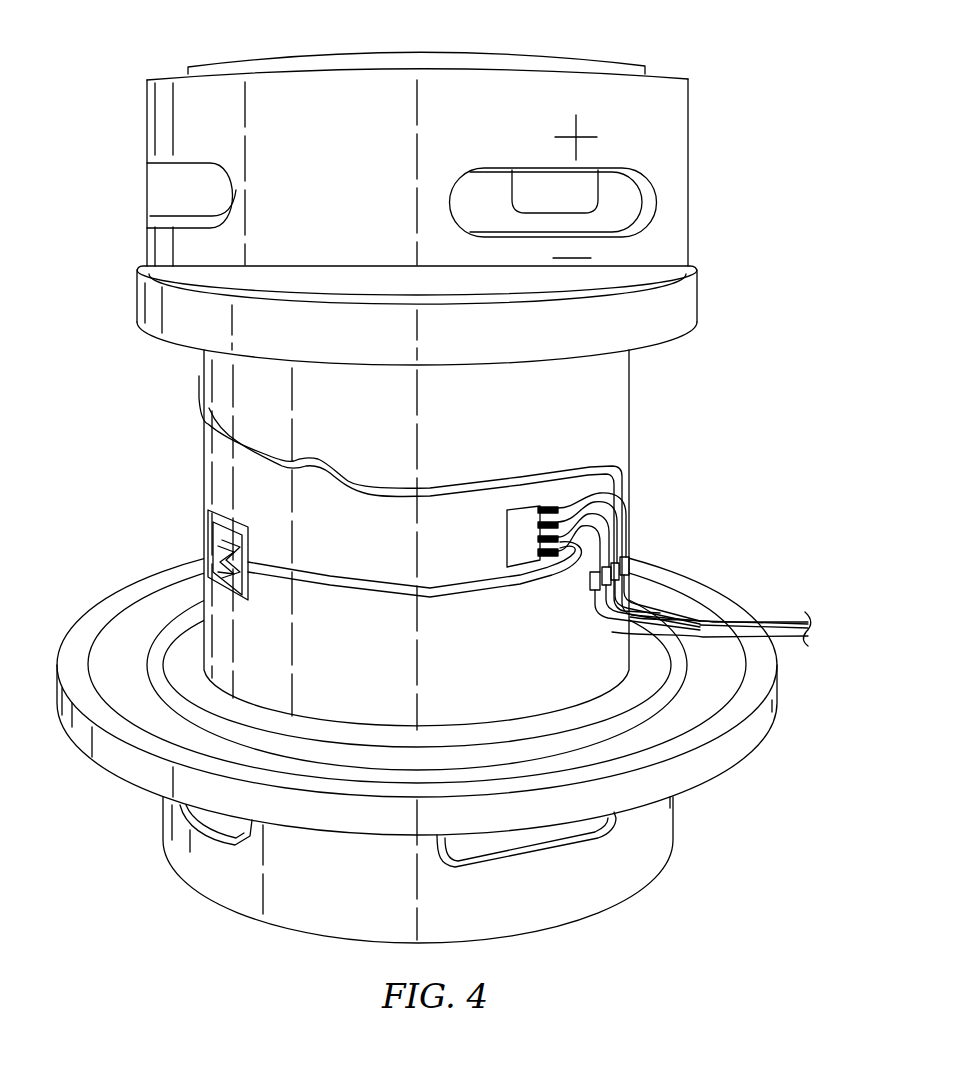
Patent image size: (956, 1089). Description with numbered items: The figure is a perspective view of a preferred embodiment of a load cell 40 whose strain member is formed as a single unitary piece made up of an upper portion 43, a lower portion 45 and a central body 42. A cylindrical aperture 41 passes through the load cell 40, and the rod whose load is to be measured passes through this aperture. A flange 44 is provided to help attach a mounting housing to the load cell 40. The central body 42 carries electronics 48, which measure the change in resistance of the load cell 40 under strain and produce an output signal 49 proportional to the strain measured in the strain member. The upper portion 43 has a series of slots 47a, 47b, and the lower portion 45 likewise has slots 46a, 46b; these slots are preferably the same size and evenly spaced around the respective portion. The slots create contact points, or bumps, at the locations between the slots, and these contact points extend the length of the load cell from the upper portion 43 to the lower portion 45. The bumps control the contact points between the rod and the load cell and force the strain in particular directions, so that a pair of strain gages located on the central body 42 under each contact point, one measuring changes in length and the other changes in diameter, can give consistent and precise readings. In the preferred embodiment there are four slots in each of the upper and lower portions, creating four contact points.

The load cell 40 is at (722, 37).
The cylindrical aperture 41 is at (466, 46).
The central body 42 is at (595, 402).
The upper portion 43 is at (423, 217).
The flange 44 is at (700, 733).
The lower portion 45 is at (421, 875).
The slot 46a is at (603, 832).
The slot 46b is at (212, 840).
The slot 47a is at (650, 205).
The slot 47b is at (190, 176).
The electronics 48 is at (540, 528).
The output signal 49 is at (695, 618).